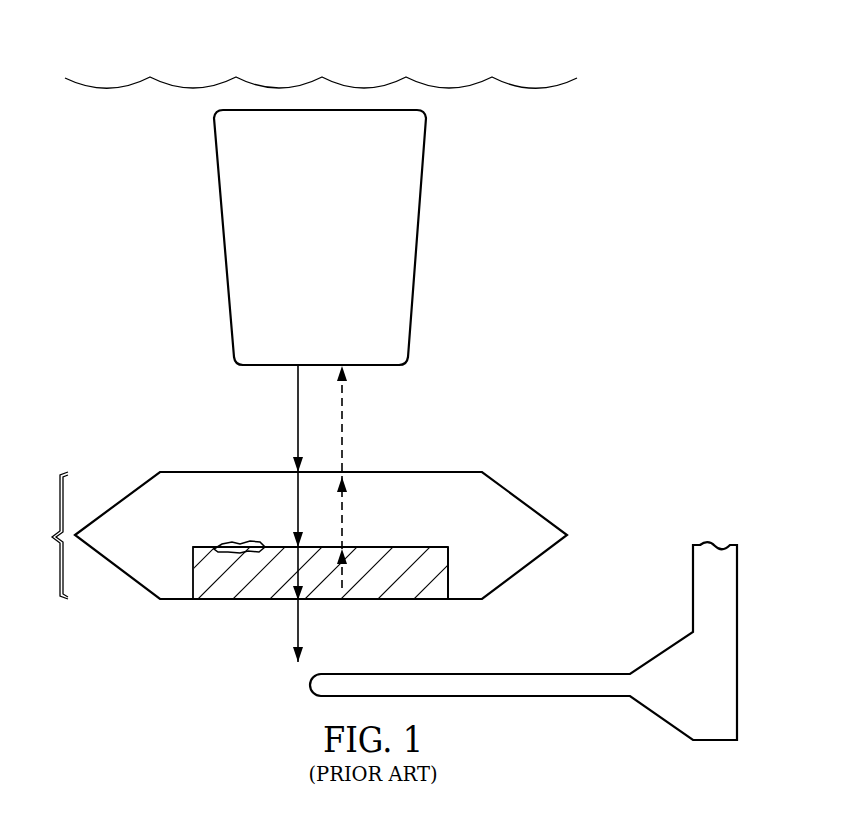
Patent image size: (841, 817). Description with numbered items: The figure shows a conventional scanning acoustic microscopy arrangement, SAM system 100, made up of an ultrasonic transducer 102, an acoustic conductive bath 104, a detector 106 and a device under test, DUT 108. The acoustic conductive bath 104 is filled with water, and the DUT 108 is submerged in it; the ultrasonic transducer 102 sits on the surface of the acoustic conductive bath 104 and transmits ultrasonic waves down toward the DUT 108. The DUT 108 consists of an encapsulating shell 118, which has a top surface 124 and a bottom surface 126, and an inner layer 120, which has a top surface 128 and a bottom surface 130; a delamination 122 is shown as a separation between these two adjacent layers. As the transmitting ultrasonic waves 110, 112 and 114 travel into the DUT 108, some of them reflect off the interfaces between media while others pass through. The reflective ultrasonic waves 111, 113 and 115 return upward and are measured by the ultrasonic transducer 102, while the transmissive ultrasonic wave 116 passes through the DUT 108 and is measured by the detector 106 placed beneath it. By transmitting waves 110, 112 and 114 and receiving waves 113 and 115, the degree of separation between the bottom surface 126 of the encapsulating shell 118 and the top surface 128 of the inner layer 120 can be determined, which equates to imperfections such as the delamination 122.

The SAM system 100 is at (150, 58).
The ultrasonic transducer 102 is at (301, 253).
The acoustic conductive bath 104 is at (532, 88).
The detector 106 is at (552, 688).
The DUT 108 is at (39, 535).
The transmitting ultrasonic wave 110 is at (298, 408).
The reflective ultrasonic wave 111 is at (343, 407).
The transmitting ultrasonic wave 112 is at (298, 488).
The reflective ultrasonic wave 113 is at (343, 508).
The transmitting ultrasonic wave 114 is at (295, 565).
The reflective ultrasonic wave 115 is at (343, 583).
The transmissive ultrasonic wave 116 is at (290, 645).
The encapsulating shell 118 is at (423, 480).
The inner layer 120 is at (222, 592).
The delamination 122 is at (223, 538).
The top surface 124 is at (146, 474).
The bottom surface 126 is at (435, 548).
The top surface 128 is at (413, 545).
The bottom surface 130 is at (423, 602).